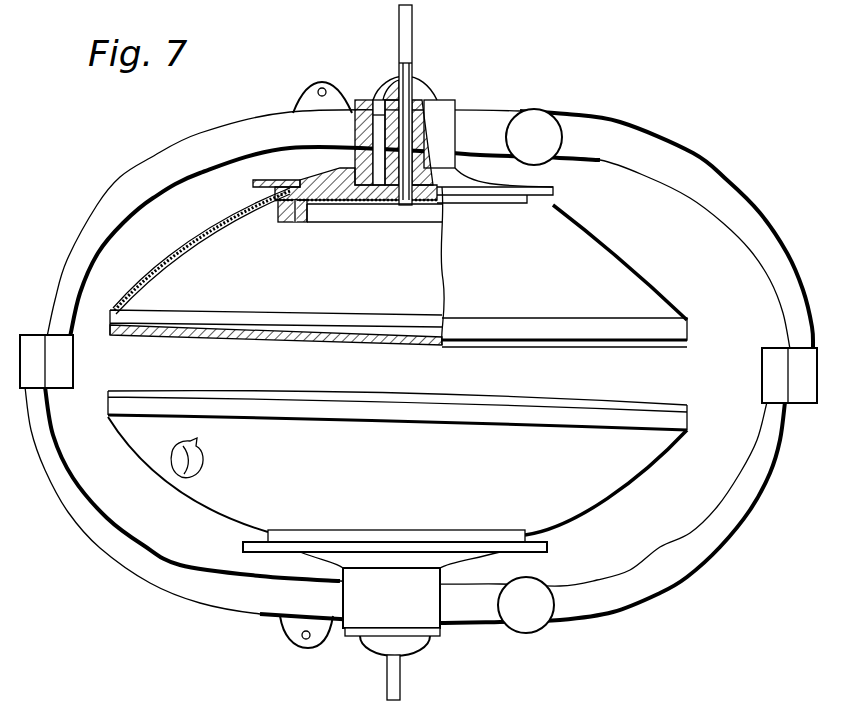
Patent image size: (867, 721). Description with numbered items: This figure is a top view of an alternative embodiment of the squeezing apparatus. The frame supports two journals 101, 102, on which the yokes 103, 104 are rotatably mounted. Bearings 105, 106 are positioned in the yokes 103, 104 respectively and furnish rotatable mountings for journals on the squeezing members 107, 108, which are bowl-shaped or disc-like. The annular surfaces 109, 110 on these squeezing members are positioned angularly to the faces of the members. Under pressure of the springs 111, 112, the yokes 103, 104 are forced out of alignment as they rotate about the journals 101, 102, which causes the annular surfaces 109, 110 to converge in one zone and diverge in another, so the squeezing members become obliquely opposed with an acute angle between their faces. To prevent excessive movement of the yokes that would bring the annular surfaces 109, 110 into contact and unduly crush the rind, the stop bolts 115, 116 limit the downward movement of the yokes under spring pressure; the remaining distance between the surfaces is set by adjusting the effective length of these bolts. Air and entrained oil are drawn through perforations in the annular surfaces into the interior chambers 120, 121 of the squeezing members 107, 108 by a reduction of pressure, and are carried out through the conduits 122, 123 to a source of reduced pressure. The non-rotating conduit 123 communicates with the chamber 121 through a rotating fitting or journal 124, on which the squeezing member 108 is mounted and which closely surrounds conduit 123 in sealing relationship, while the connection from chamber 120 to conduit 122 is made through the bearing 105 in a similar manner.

The journal 101 is at (32, 334).
The journal 102 is at (795, 404).
The yoke 103 is at (117, 556).
The yoke 104 is at (100, 204).
The bearing 105 is at (425, 614).
The bearing 106 is at (440, 118).
The squeezing member 107 is at (618, 486).
The squeezing member 108 is at (618, 257).
The annular surface 109 is at (134, 340).
The annular surface 110 is at (128, 391).
The spring 111 is at (546, 624).
The spring 112 is at (552, 121).
The stop bolt 115 is at (292, 644).
The stop bolt 116 is at (343, 72).
The interior chamber 120 is at (178, 468).
The interior chamber 121 is at (210, 247).
The conduit 122 is at (398, 683).
The conduit 123 is at (410, 45).
The rotating fitting 124 is at (394, 102).